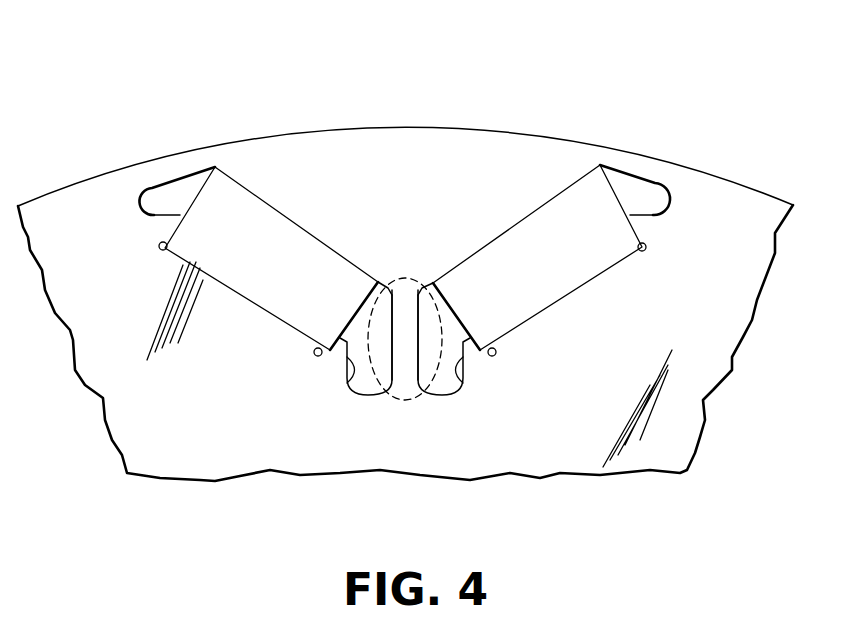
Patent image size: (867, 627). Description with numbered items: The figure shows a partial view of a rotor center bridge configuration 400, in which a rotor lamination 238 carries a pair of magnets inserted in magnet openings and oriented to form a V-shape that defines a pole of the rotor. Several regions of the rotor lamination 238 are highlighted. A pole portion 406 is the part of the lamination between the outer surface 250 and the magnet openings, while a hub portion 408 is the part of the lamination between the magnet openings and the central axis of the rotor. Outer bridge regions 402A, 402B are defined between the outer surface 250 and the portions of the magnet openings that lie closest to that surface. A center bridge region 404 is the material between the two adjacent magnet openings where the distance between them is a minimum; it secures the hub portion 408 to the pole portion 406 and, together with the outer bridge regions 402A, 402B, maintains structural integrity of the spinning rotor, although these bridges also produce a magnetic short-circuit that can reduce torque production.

The rotor center bridge configuration 400 is at (652, 68).
The rotor lamination 238 is at (714, 326).
The outer surface 250 is at (753, 190).
The outer bridge region 402A is at (544, 312).
The outer bridge region 402B is at (265, 313).
The pole portion 406 is at (422, 163).
The center bridge region 404 is at (402, 400).
The hub portion 408 is at (374, 427).